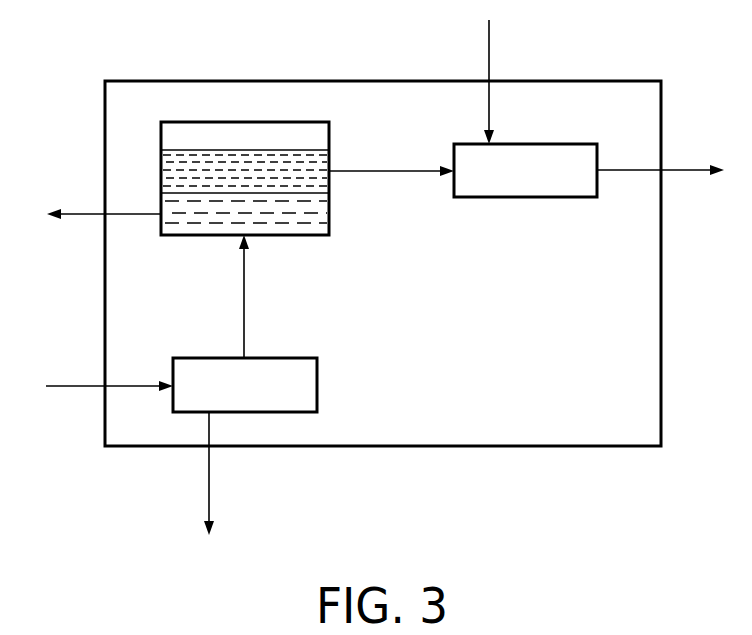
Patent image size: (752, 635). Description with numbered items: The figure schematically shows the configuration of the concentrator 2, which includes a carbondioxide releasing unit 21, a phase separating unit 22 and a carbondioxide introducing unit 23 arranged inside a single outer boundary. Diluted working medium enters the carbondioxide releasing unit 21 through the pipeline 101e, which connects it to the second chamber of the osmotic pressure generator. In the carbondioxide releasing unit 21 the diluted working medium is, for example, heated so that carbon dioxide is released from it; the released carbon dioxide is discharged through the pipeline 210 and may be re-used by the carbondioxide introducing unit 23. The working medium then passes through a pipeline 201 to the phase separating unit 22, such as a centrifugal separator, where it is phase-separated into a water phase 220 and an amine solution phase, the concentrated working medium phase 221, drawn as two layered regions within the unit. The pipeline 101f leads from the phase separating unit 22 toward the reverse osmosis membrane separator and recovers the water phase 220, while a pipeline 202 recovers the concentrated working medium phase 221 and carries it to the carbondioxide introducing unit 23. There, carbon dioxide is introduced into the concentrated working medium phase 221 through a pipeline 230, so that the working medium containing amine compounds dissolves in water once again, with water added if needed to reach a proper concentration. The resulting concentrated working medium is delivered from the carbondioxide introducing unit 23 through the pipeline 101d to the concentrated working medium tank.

The concentrator 2 is at (618, 447).
The carbondioxide releasing unit 21 is at (317, 385).
The phase separating unit 22 is at (178, 122).
The carbondioxide introducing unit 23 is at (565, 143).
The pipeline 101d is at (683, 170).
The pipeline 101e is at (82, 386).
The pipeline 101f is at (83, 213).
The pipeline 201 is at (244, 292).
The pipeline 202 is at (398, 168).
The pipeline 210 is at (209, 479).
The water phase 220 is at (310, 227).
The concentrated working medium phase 221 is at (325, 183).
The pipeline 230 is at (489, 40).